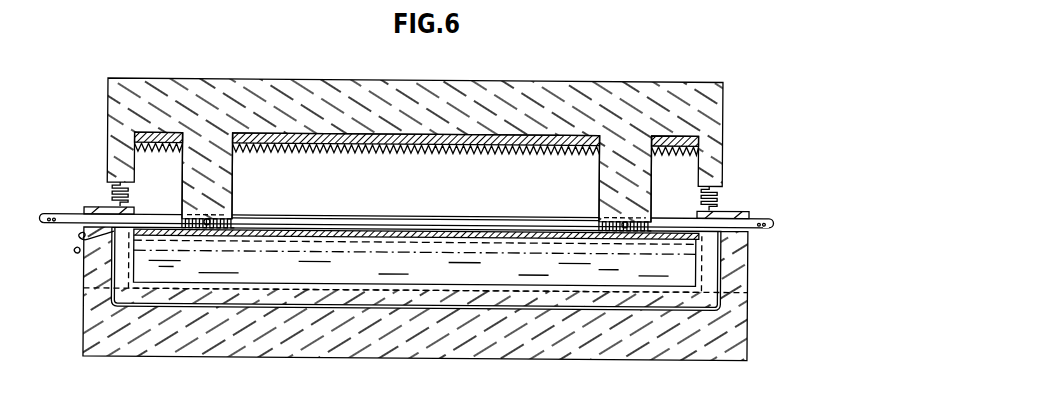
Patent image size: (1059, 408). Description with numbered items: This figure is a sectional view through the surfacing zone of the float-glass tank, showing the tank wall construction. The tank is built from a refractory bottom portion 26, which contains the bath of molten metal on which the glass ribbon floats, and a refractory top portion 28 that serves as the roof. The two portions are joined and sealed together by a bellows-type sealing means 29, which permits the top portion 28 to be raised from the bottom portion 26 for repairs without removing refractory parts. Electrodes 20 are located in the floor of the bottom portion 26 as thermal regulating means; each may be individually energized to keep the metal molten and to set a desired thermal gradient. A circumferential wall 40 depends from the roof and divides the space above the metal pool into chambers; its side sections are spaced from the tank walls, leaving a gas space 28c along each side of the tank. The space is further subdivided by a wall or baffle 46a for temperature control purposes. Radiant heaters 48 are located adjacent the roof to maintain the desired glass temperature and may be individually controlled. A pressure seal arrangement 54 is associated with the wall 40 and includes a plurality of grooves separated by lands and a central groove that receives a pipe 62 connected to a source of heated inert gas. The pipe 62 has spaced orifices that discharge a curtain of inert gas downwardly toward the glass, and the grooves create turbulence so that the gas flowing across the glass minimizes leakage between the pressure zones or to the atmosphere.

The electrodes 20 is at (417, 306).
The refractory bottom portion 26 is at (85, 343).
The refractory top portion 28 is at (108, 103).
The gas space 28c is at (143, 159).
The sealing means 29 is at (113, 193).
The circumferential wall 40 is at (233, 175).
The wall or baffle 46a is at (416, 177).
The radiant heaters 48 is at (662, 149).
The pressure seal arrangement 54 is at (182, 221).
The pipe 62 is at (61, 214).